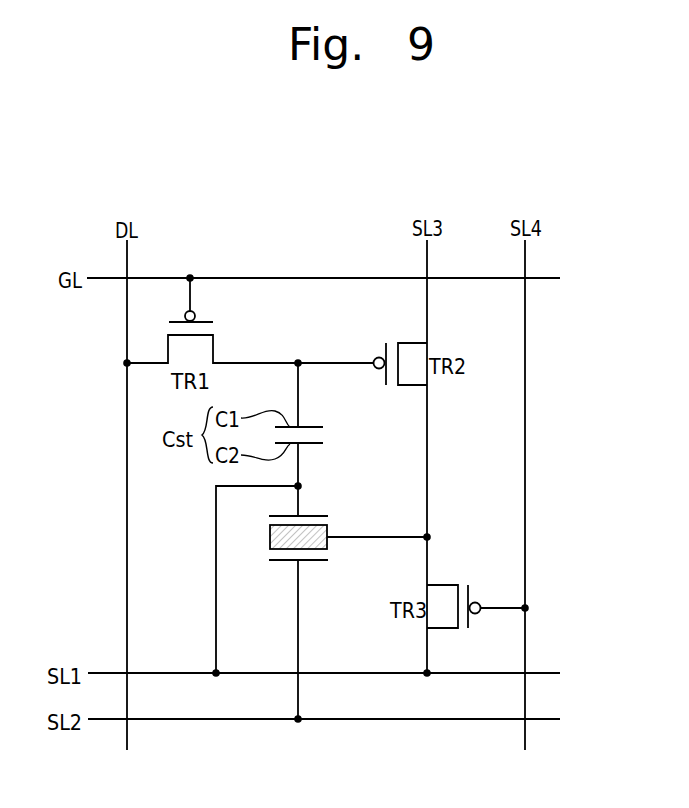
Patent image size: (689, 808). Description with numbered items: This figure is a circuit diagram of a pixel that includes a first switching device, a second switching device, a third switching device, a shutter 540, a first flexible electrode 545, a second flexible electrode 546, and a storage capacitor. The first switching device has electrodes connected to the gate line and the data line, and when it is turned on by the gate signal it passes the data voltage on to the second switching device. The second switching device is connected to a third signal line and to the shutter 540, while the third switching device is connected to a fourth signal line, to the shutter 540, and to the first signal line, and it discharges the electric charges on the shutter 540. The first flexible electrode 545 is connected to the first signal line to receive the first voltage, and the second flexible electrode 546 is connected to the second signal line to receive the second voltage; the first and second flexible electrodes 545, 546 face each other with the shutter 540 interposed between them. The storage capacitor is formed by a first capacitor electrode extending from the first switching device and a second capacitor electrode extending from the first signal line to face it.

The shutter 540 is at (328, 533).
The first flexible electrode 545 is at (312, 510).
The second flexible electrode 546 is at (312, 562).